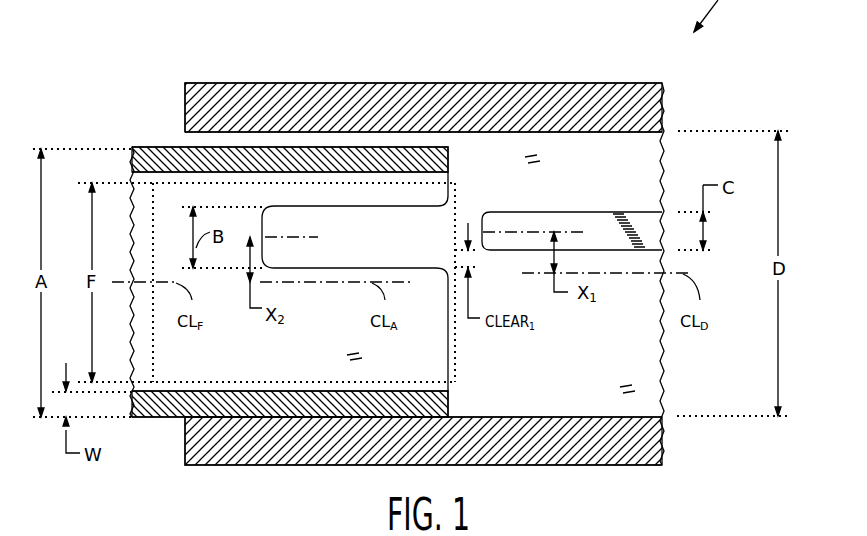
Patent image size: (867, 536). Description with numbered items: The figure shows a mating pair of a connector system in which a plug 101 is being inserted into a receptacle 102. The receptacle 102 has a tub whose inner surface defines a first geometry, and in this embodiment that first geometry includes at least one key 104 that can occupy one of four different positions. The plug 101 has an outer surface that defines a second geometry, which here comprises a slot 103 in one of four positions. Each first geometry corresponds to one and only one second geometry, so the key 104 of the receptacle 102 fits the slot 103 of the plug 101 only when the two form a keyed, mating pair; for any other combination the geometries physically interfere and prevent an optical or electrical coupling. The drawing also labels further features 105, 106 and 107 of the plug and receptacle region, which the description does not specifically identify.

The plug 101 is at (146, 130).
The receptacle 102 is at (557, 78).
The slot 103 is at (372, 247).
The key 104 is at (607, 212).
The pin tip 105 is at (481, 222).
The bore shoulder 106 is at (447, 266).
The end wall 107 is at (450, 343).